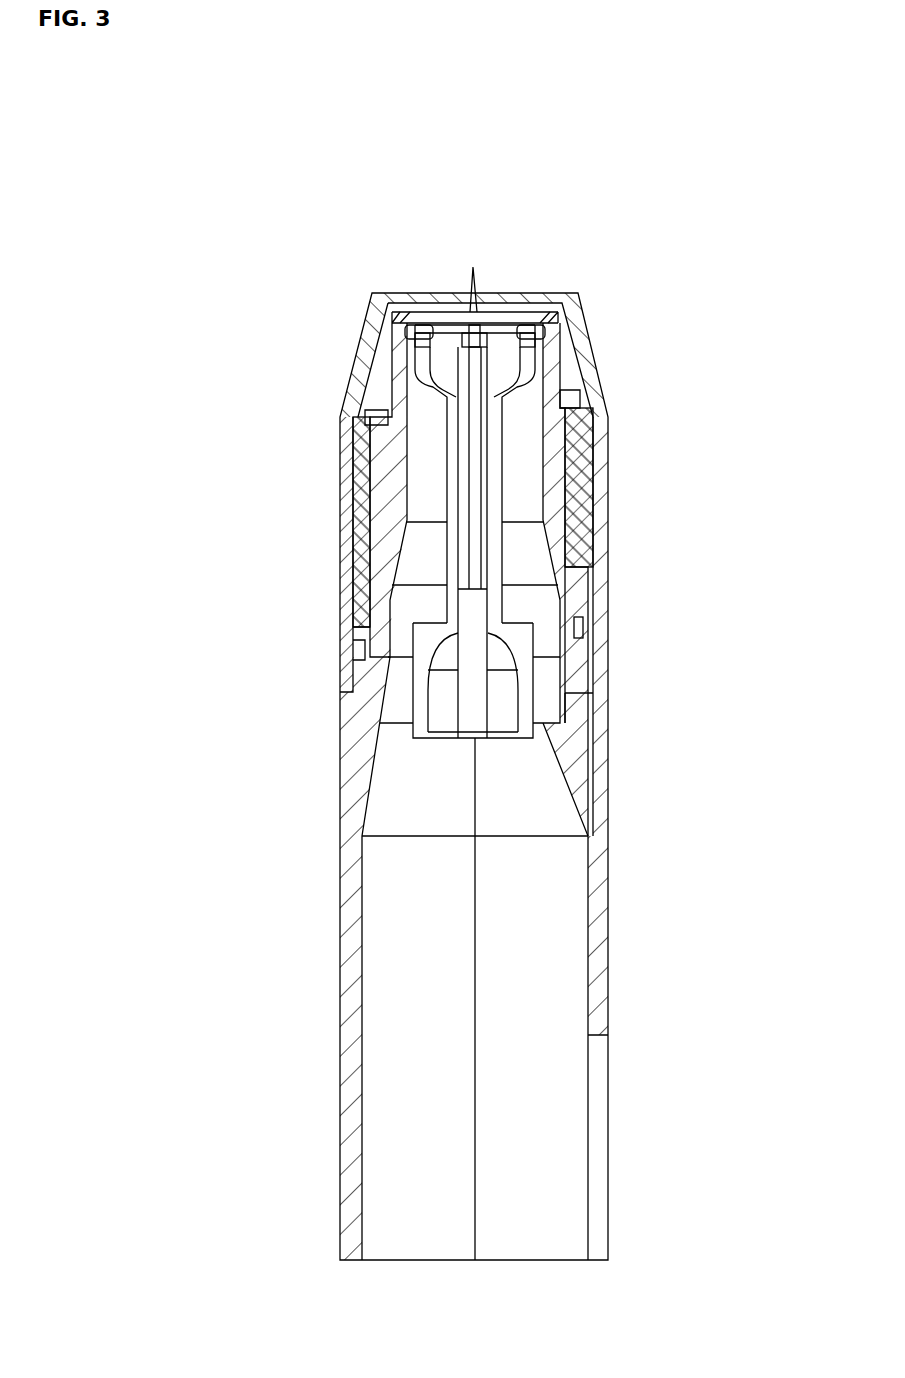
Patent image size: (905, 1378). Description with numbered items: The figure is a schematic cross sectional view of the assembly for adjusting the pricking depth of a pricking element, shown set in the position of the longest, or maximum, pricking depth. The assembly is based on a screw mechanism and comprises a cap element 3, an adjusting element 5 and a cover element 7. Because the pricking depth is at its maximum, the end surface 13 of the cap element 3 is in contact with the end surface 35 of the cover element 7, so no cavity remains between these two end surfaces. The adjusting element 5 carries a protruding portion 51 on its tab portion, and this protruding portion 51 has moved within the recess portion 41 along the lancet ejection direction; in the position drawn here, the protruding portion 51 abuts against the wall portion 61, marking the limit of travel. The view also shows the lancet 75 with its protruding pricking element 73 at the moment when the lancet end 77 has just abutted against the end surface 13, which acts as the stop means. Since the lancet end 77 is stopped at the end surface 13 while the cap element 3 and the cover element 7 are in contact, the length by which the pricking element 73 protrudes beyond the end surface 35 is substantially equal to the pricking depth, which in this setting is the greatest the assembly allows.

The cap element 3 is at (342, 740).
The stop means 13 is at (372, 323).
The end surface 35 is at (600, 333).
The cover element 7 is at (605, 460).
The adjusting element 5 is at (607, 537).
The recess portion 41 is at (370, 633).
The protruding portion 51 is at (603, 648).
The wall portion 61 is at (605, 677).
The pricking element 73 is at (478, 285).
The lancet end 77 is at (447, 345).
The lancet 75 is at (505, 688).